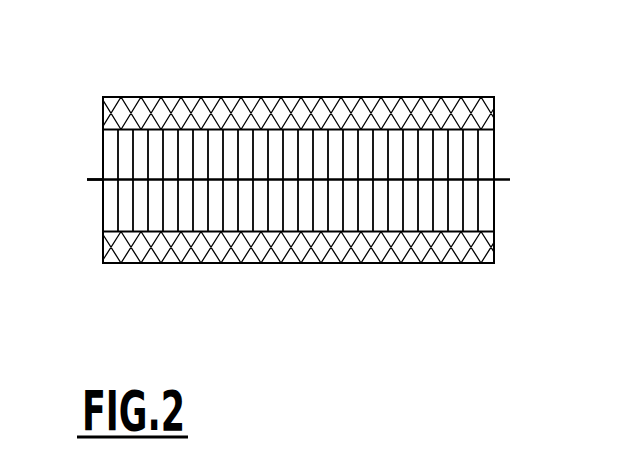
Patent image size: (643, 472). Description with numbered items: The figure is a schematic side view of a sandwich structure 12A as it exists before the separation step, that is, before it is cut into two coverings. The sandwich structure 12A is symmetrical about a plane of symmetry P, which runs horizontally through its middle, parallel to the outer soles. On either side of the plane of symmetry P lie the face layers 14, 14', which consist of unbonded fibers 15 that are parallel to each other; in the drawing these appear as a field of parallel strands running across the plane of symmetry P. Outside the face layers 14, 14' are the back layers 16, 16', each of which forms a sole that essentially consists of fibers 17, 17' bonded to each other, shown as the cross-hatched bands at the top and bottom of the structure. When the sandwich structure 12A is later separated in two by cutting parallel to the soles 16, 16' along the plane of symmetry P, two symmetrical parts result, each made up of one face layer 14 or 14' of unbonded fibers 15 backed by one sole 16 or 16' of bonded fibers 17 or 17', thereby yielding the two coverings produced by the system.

The sandwich structure 12A is at (78, 176).
The face layer 14 is at (348, 271).
The face layer 14' is at (349, 105).
The unbonded fibers 15 is at (496, 189).
The back layer 16 is at (298, 296).
The back layer 16' is at (298, 65).
The bonded fibers 17 is at (301, 284).
The bonded fibers 17' is at (301, 77).
The plane of symmetry P is at (500, 179).